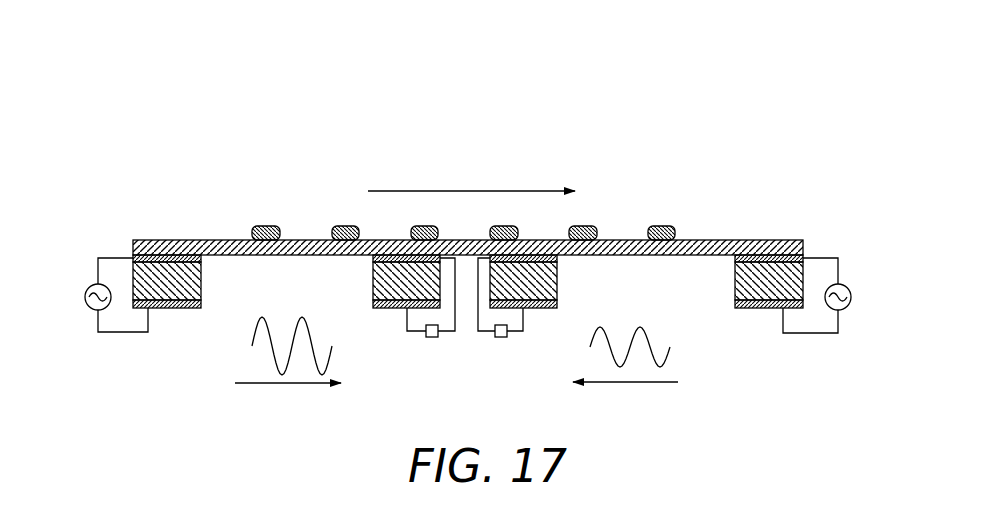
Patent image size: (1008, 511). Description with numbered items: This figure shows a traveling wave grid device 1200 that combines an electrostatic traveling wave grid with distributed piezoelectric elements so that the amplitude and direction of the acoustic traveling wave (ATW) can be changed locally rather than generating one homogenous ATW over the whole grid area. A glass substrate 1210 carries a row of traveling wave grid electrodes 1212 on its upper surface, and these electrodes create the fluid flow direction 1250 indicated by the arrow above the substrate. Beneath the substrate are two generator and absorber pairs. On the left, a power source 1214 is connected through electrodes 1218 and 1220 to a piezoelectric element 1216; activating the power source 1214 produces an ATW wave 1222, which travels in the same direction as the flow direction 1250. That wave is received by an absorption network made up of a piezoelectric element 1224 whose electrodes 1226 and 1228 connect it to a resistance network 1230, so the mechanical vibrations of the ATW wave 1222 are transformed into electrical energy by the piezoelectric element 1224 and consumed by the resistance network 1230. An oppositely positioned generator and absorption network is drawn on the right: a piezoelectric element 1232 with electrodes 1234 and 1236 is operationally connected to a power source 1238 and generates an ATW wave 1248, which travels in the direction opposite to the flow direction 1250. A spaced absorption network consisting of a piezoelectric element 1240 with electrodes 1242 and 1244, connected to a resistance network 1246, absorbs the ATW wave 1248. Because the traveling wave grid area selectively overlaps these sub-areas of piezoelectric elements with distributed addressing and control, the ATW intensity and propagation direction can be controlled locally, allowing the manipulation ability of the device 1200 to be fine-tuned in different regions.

The traveling wave grid device 1200 is at (624, 163).
The glass substrate 1210 is at (741, 243).
The traveling wave grid electrodes 1212 is at (343, 227).
The power source 1214 is at (90, 285).
The piezoelectric element 1216 is at (170, 295).
The electrode 1218 is at (201, 260).
The electrode 1220 is at (201, 305).
The ATW wave 1222 is at (262, 383).
The piezoelectric element 1224 is at (388, 292).
The electrode 1226 is at (372, 261).
The electrode 1228 is at (372, 304).
The resistance network 1230 is at (430, 338).
The piezoelectric element 1232 is at (767, 290).
The electrode 1234 is at (735, 263).
The electrode 1236 is at (735, 305).
The power source 1238 is at (848, 288).
The piezoelectric element 1240 is at (543, 292).
The electrode 1242 is at (558, 261).
The electrode 1244 is at (558, 305).
The resistance network 1246 is at (500, 338).
The ATW wave 1248 is at (645, 382).
The flow direction 1250 is at (525, 193).